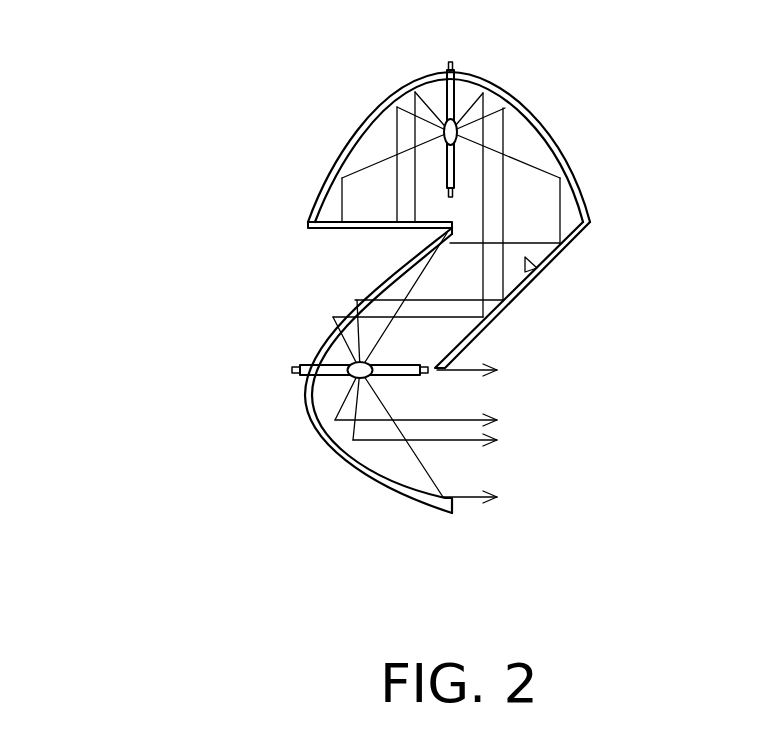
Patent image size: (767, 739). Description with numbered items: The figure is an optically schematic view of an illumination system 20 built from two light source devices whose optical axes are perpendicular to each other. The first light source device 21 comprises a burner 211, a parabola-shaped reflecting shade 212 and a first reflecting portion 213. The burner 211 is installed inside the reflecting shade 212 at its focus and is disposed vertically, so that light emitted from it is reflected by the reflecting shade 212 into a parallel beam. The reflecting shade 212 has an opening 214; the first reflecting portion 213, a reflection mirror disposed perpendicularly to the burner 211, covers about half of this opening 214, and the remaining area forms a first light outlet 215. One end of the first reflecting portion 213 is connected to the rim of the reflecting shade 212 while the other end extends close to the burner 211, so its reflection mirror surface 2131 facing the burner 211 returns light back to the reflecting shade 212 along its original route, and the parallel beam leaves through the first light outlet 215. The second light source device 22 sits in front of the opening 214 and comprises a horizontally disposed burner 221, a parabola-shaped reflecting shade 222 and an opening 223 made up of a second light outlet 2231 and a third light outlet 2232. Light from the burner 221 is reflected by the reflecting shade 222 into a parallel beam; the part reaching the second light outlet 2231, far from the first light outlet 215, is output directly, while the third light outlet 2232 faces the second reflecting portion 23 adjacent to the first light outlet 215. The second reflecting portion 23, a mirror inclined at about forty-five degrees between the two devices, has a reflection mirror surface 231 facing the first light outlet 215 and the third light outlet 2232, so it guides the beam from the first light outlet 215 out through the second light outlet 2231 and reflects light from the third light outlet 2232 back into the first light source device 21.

The illumination system 20 is at (150, 422).
The first light source device 21 is at (567, 155).
The burner 211 is at (452, 100).
The parabola-shaped reflecting shade 212 is at (520, 102).
The first reflecting portion 213 is at (347, 225).
The reflection mirror surface 2131 is at (375, 215).
The opening 214 is at (462, 217).
The first light outlet 215 is at (522, 225).
The second reflecting portion 23 is at (505, 307).
The reflection mirror surface 231 is at (540, 272).
The second light source device 22 is at (362, 470).
The burner 221 is at (303, 357).
The parabola-shaped reflecting shade 222 is at (308, 410).
The opening 223 is at (655, 358).
The second light outlet 2231 is at (452, 400).
The third light outlet 2232 is at (433, 343).